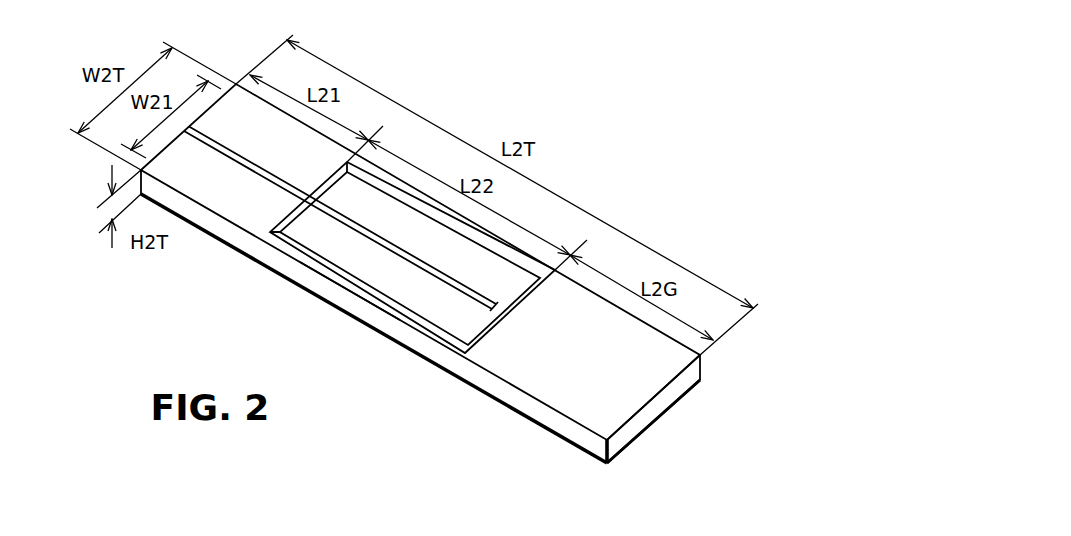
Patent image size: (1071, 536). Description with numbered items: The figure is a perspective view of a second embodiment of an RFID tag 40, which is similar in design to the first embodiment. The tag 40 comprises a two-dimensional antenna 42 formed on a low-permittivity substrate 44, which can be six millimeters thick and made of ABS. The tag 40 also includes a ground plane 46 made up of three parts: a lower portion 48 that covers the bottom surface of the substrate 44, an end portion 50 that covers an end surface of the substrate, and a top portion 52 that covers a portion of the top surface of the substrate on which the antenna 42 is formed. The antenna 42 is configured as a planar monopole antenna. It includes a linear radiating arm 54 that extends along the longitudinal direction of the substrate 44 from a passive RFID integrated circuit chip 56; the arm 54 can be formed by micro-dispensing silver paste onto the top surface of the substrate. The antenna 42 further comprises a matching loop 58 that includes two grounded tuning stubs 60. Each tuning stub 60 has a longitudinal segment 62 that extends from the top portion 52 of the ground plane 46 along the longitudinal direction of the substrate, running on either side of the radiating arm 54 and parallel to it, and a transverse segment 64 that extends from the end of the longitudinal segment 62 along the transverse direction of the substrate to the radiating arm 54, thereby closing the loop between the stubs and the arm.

The RFID tag 40 is at (617, 143).
The antenna 42 is at (282, 137).
The substrate 44 is at (460, 365).
The ground plane 46 is at (677, 430).
The lower portion 48 is at (537, 427).
The end portion 50 is at (627, 440).
The top portion 52 is at (658, 382).
The radiating arm 54 is at (240, 157).
The passive RFID integrated circuit chip 56 is at (483, 312).
The matching loop 58 is at (347, 295).
The grounded tuning stubs 60 is at (407, 192).
The longitudinal segment 62 is at (428, 218).
The transverse segment 64 is at (335, 172).